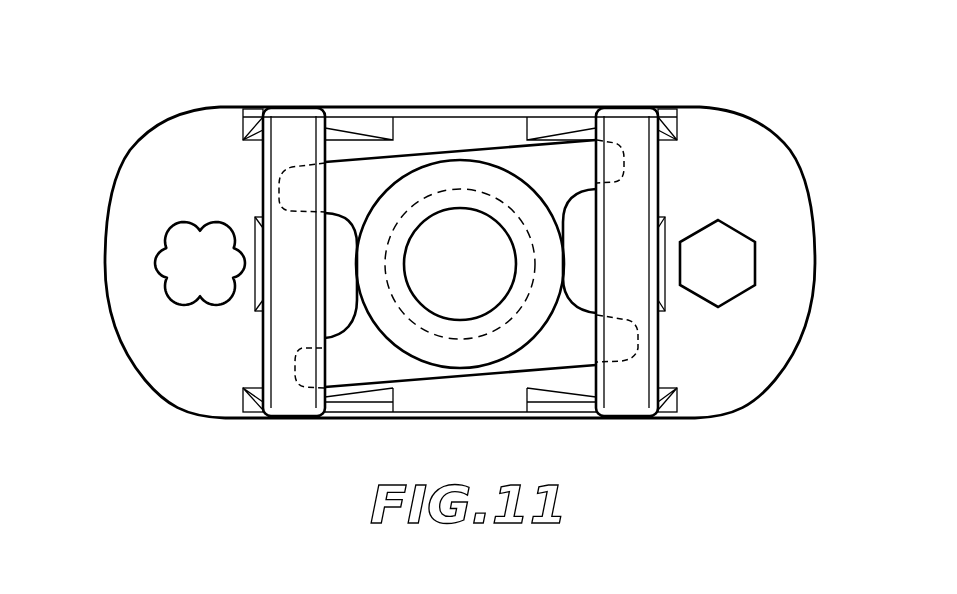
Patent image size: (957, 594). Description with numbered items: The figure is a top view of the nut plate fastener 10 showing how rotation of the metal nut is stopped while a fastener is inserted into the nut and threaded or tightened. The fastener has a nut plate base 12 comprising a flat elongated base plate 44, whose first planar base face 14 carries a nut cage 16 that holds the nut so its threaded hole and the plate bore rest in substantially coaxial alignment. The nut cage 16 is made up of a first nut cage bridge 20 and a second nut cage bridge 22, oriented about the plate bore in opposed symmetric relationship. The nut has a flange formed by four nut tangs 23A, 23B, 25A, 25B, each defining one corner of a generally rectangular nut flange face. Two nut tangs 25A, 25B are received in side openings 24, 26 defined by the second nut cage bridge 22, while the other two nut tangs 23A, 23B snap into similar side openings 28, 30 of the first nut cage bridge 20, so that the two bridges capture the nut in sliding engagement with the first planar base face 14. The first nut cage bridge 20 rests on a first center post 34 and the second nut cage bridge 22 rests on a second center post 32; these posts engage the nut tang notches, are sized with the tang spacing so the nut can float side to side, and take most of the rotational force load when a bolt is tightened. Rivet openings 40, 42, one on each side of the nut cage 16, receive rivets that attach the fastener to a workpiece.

The nut plate fastener 10 is at (722, 60).
The nut plate base 12 is at (147, 148).
The first planar base face 14 is at (767, 162).
The nut cage 16 is at (632, 104).
The first nut cage bridge 20 is at (292, 152).
The second nut cage bridge 22 is at (635, 170).
The first nut tang 23A is at (330, 358).
The second nut tang 23B is at (330, 180).
The third nut tang 25A is at (587, 345).
The fourth nut tang 25B is at (590, 165).
The side opening 24 is at (678, 340).
The side opening 26 is at (680, 187).
The side opening 28 is at (246, 340).
The side opening 30 is at (245, 187).
The second center post 32 is at (660, 268).
The first center post 34 is at (260, 276).
The rivet opening 40 is at (245, 257).
The rivet opening 42 is at (750, 240).
The base plate 44 is at (355, 420).